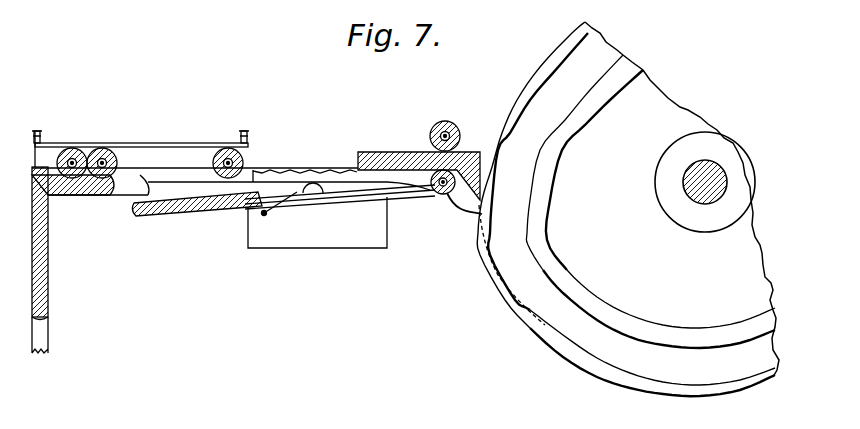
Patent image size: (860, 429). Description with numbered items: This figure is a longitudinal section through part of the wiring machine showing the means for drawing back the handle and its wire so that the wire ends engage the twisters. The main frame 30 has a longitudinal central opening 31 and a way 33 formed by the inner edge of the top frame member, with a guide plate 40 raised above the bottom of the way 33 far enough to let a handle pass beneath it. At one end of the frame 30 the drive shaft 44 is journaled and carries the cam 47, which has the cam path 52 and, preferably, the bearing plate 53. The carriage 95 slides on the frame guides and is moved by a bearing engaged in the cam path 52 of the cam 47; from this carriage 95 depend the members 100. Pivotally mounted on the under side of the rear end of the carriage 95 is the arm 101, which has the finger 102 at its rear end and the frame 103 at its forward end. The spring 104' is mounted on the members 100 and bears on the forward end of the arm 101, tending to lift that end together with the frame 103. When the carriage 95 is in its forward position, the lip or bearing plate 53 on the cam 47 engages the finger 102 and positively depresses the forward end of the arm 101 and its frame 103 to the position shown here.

The main frame 30 is at (48, 255).
The longitudinal central openings 31 is at (128, 197).
The ways 33 is at (37, 150).
The guide plates 40 is at (141, 143).
The drive shaft 44 is at (697, 177).
The cam 47 is at (620, 373).
The cam path 52 is at (540, 133).
The bearing plate 53 is at (505, 273).
The carriage 95 is at (360, 151).
The members 100 is at (324, 243).
The arm 101 is at (400, 203).
The finger 102 is at (450, 205).
The frame 103 is at (160, 215).
The spring 104' is at (295, 206).